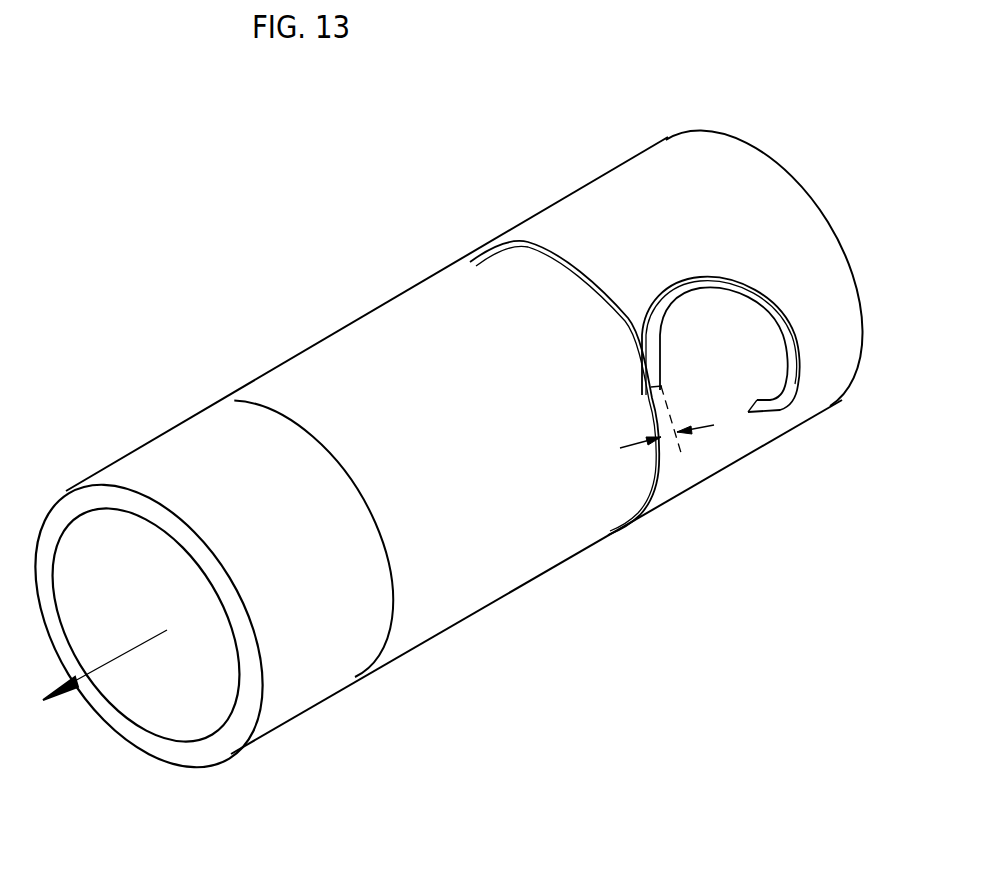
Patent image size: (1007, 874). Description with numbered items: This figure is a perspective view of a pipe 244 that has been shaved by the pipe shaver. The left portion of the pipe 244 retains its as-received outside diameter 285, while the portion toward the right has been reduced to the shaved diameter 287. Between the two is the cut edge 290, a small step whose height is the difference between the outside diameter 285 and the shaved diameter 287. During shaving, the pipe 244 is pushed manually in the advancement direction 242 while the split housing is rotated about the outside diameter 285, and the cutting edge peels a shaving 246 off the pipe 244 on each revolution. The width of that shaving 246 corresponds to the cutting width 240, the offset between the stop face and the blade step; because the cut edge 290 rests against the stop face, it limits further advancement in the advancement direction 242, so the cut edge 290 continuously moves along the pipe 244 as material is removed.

The outside diameter 285 is at (648, 178).
The shaved diameter 287 is at (438, 340).
The pipe 244 is at (330, 660).
The advancement direction 242 is at (81, 697).
The cut edge 290 is at (648, 507).
The shaving 246 is at (792, 362).
The cutting width 240 is at (713, 426).